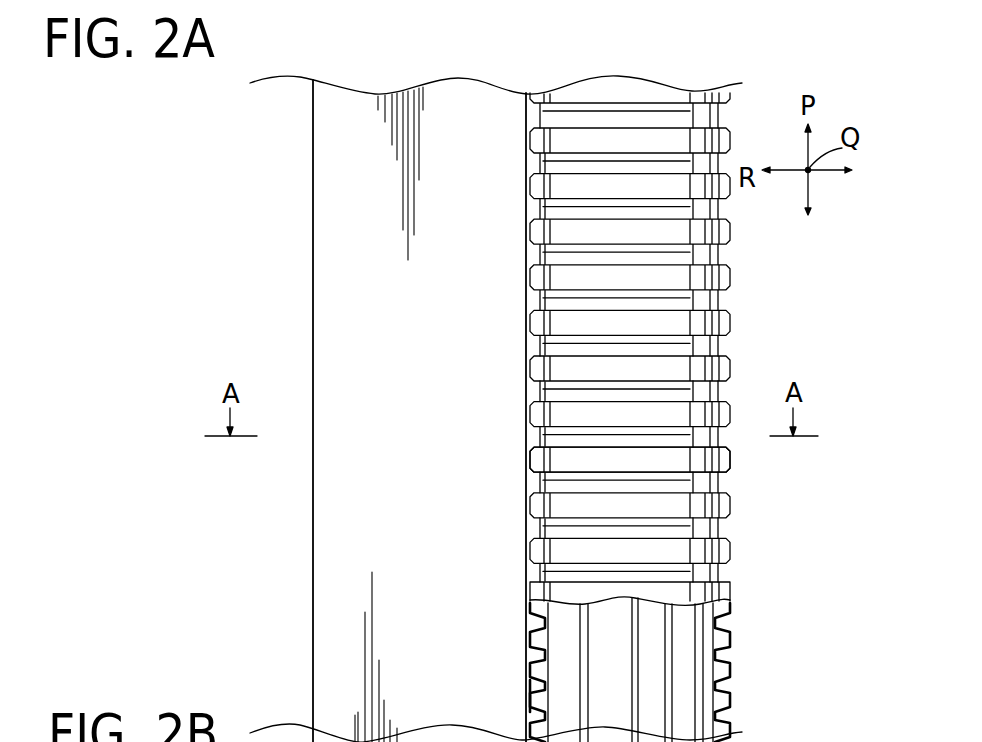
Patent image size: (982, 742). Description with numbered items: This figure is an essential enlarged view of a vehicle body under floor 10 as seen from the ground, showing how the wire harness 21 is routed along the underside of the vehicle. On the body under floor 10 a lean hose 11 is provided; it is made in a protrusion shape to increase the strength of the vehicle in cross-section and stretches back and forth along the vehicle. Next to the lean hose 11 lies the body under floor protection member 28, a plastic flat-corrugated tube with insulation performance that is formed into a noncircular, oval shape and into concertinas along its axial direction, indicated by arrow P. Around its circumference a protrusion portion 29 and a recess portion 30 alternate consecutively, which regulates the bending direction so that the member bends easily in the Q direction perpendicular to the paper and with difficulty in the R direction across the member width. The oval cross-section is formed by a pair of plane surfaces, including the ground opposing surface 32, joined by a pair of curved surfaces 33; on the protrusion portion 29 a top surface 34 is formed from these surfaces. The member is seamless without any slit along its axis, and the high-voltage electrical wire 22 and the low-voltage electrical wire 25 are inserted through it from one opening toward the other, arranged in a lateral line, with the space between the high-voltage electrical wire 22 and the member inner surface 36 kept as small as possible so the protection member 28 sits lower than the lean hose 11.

The body under floor 10 is at (248, 225).
The lean hose 11 is at (338, 312).
The wire harness 21 is at (629, 349).
The high-voltage electrical wire 22 is at (588, 623).
The low-voltage electrical wire 25 is at (657, 688).
The body under floor protection member 28 is at (728, 368).
The protrusion portion 29 is at (727, 508).
The recess portion 30 is at (722, 484).
The ground opposing surface 32 is at (585, 415).
The curved surface 33 is at (565, 457).
The top surface 34 is at (593, 462).
The member inner surface 36 is at (536, 704).